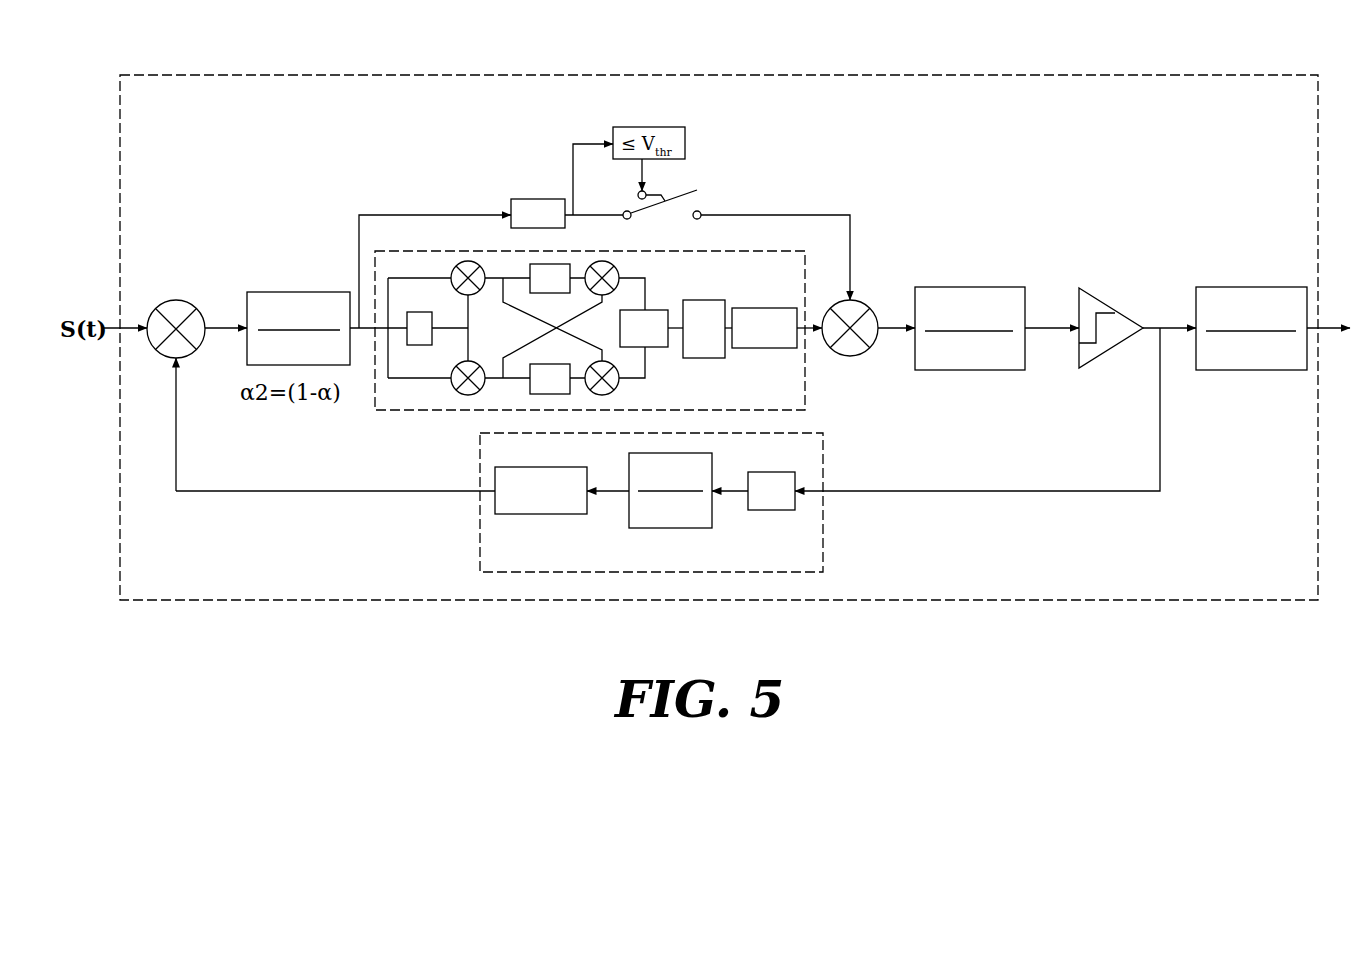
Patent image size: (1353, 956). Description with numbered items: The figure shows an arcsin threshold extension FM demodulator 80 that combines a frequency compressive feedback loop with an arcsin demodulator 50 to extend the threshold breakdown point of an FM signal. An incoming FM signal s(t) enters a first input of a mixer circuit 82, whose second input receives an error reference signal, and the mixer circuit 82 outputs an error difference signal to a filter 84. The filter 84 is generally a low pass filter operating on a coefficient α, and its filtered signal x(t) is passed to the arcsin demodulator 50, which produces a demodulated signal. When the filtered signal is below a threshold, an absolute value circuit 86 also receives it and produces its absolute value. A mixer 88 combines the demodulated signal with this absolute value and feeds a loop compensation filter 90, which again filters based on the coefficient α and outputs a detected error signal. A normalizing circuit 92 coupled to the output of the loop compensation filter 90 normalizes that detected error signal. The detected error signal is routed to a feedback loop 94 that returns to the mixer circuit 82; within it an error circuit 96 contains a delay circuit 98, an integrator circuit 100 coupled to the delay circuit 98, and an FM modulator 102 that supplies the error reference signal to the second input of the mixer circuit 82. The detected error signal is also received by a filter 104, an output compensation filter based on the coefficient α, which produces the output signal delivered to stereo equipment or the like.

The arcsin threshold extension FM demodulator 80 is at (720, 75).
The mixer circuit 82 is at (176, 300).
The filter 84 is at (282, 292).
The absolute value circuit 86 is at (535, 199).
The arcsin demodulator 50 is at (710, 251).
The mixer 88 is at (850, 356).
The loop compensation filter 90 is at (970, 287).
The normalizing circuit 92 is at (1110, 310).
The filter 104 is at (1232, 287).
The feedback loop 94 is at (892, 512).
The error circuit 96 is at (478, 527).
The delay circuit 98 is at (778, 472).
The integrator circuit 100 is at (672, 528).
The FM modulator 102 is at (540, 514).